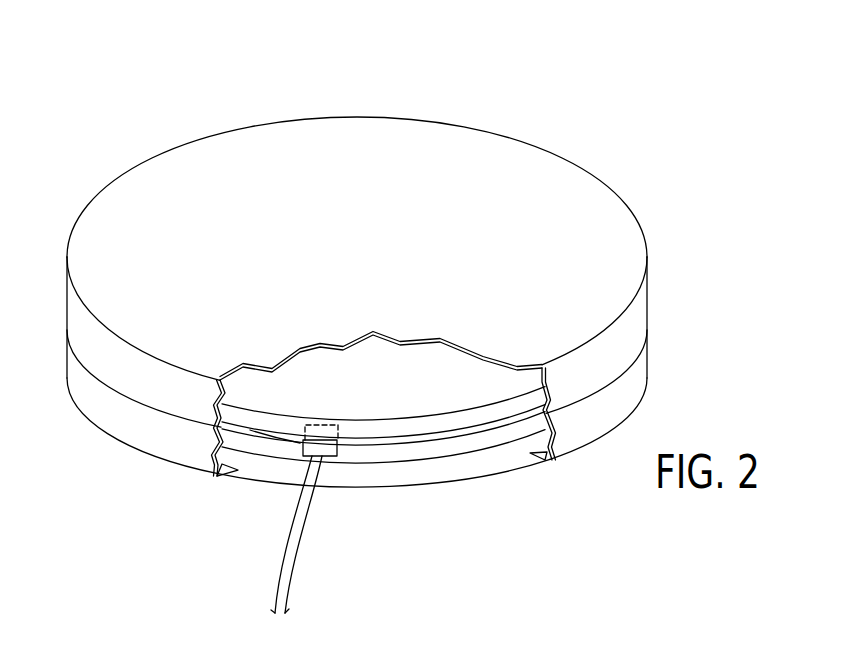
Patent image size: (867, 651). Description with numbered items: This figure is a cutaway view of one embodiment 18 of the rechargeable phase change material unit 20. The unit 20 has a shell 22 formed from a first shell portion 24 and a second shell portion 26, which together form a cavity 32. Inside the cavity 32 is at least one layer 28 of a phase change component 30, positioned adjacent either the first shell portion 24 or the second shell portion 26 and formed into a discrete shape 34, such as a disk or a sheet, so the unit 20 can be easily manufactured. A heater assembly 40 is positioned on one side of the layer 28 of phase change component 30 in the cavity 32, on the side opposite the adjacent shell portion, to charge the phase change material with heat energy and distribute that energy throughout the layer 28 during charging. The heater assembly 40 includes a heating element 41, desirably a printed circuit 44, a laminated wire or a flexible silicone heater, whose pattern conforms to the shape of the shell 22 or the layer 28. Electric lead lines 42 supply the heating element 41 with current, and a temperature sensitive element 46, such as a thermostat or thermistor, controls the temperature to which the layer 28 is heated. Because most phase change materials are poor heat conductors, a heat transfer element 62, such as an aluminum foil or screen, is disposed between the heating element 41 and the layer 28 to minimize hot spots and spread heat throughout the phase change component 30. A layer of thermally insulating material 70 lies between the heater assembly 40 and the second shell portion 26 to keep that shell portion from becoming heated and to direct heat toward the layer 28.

The embodiment 18 is at (142, 147).
The rechargeable phase change material unit 20 is at (248, 137).
The shell 22 is at (493, 128).
The first shell portion 24 is at (643, 300).
The second shell portion 26 is at (642, 358).
The layer of phase change component 28 is at (227, 418).
The phase change component 30 is at (295, 385).
The discrete shape 34 is at (433, 363).
The heater assembly 40 is at (262, 453).
The heating element 41 is at (388, 452).
The electric lead line 42 is at (290, 568).
The printed circuit 44 is at (278, 455).
The temperature sensitive element 46 is at (328, 463).
The heat transfer element 62 is at (438, 440).
The thermally insulating material 70 is at (487, 455).
The cavity 32 is at (541, 459).